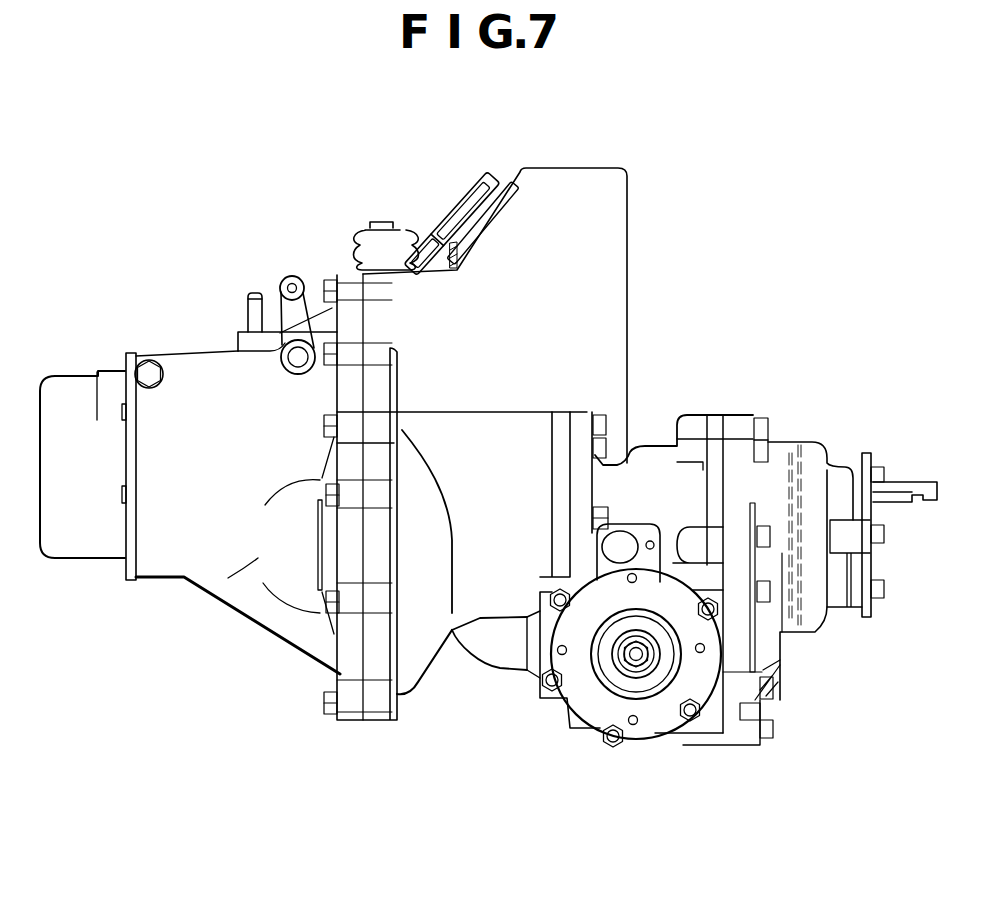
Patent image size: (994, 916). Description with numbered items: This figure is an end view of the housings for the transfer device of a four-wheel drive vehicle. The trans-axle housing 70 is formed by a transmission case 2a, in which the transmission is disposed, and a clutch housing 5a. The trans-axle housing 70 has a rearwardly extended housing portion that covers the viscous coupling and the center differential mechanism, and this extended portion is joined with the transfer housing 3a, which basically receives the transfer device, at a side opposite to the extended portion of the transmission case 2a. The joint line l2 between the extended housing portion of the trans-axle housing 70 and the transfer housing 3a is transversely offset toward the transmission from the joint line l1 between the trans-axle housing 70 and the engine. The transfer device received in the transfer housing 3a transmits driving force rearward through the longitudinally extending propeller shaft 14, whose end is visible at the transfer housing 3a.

The trans-axle housing 70 is at (323, 219).
The transmission case 2a is at (178, 377).
The clutch housing 5a is at (407, 312).
The joint line l1 is at (634, 243).
The joint line l2 is at (582, 475).
The transfer housing 3a is at (676, 490).
The propeller shaft 14 is at (635, 664).